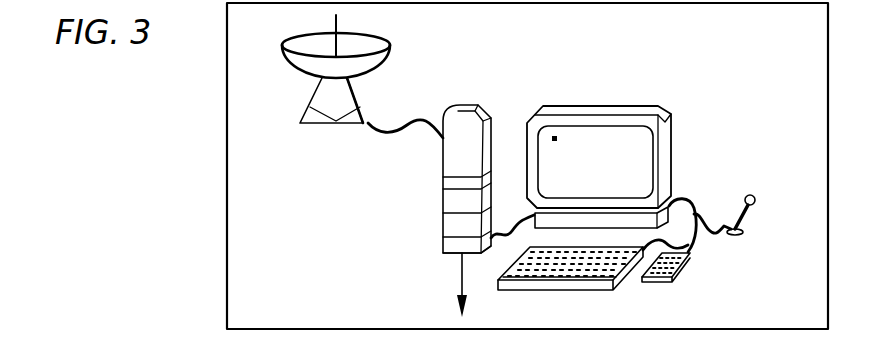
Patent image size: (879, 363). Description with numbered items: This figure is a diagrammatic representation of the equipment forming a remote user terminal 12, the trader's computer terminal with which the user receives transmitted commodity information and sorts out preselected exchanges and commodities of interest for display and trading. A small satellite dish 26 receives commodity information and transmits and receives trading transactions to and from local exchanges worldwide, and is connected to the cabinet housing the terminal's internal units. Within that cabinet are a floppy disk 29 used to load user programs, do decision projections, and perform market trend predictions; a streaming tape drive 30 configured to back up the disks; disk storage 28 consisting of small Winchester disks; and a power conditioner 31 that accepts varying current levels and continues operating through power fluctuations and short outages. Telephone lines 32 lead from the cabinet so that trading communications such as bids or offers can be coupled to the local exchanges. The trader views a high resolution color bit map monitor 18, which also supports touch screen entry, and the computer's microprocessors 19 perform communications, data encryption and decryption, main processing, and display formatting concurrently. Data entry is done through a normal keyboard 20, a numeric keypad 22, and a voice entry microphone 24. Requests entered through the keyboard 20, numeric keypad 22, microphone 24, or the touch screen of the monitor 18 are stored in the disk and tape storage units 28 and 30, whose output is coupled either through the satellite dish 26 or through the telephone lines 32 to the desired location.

The remote user terminal 12 is at (210, 281).
The monitor 18 is at (630, 107).
The microprocessors 19 is at (627, 220).
The keyboard 20 is at (593, 290).
The numeric keypad 22 is at (679, 279).
The voice entry microphone 24 is at (742, 229).
The satellite dish 26 is at (298, 67).
The disk storage 28 is at (443, 197).
The floppy disk 29 is at (443, 153).
The tape drive 30 is at (443, 182).
The power conditioner 31 is at (443, 250).
The telephone lines 32 is at (460, 273).